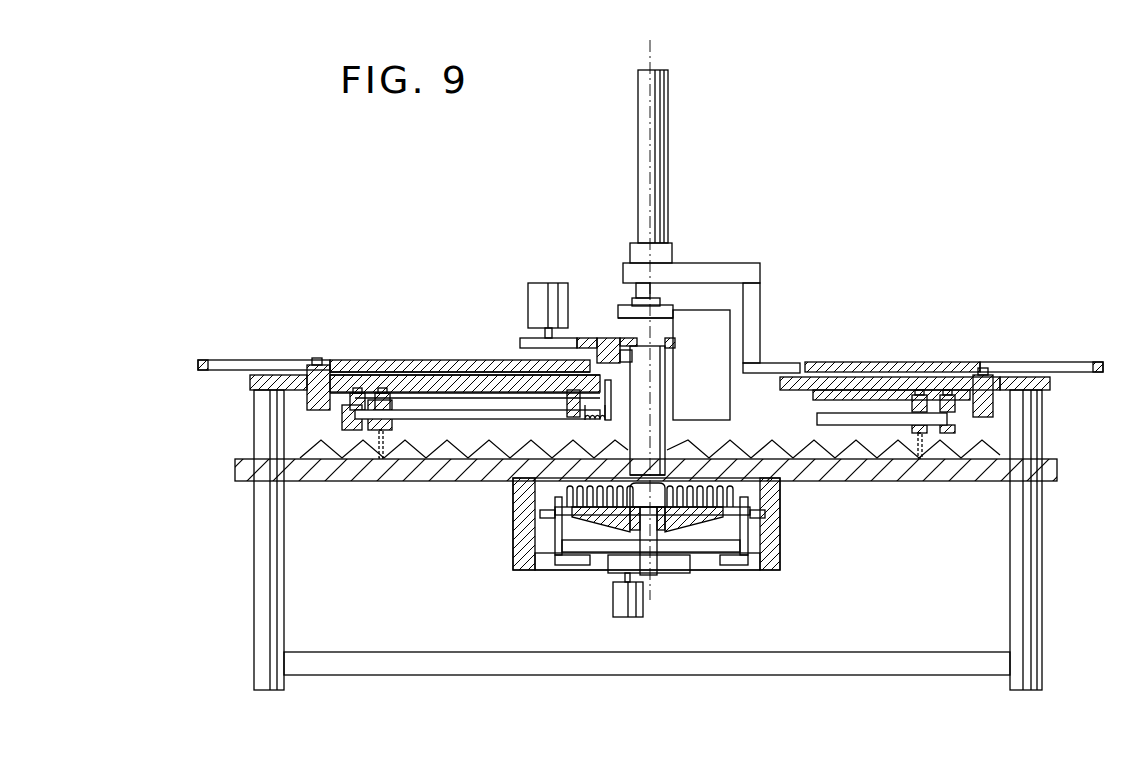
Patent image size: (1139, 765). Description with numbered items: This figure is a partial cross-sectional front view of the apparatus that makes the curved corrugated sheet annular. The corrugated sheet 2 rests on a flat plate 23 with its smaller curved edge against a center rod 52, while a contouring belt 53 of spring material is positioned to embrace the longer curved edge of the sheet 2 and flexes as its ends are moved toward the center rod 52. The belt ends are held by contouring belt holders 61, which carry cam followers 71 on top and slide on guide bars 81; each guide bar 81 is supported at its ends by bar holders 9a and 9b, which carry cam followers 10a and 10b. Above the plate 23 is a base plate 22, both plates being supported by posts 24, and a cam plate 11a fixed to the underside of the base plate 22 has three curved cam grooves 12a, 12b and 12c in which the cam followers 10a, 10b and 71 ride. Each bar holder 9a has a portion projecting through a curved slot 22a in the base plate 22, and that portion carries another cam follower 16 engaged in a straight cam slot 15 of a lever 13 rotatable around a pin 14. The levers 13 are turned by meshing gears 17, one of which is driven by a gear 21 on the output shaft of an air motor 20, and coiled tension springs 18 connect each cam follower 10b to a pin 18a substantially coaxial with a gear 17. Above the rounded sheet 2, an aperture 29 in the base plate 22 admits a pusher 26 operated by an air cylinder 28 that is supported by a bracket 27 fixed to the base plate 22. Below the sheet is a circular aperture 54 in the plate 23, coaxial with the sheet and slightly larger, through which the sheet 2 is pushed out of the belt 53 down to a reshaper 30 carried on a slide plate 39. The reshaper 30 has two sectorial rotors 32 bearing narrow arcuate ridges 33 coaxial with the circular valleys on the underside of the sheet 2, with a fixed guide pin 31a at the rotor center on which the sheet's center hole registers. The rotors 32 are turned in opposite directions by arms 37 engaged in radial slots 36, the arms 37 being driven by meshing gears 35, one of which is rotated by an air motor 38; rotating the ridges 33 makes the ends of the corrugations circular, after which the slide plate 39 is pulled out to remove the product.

The corrugated sheet 2 is at (428, 445).
The bar holder 9a is at (316, 412).
The bar holder 9b is at (560, 435).
The cam follower 10a is at (368, 396).
The cam follower 10b is at (470, 378).
The cam plate 11a is at (405, 396).
The cam groove 12a is at (356, 392).
The cam groove 12b is at (567, 360).
The cam groove 12c is at (387, 393).
The lever 13 is at (208, 360).
The pin 14 is at (598, 348).
The cam slot 15 is at (328, 372).
The cam follower 16 is at (318, 378).
The gear 17 is at (685, 283).
The coiled tension spring 18 is at (609, 382).
The pin 18a is at (605, 412).
The air motor 20 is at (535, 288).
The gear 21 is at (520, 342).
The base plate 22 is at (1020, 377).
The curved slot 22a is at (280, 386).
The flat plate 23 is at (1048, 472).
The post 24 is at (265, 420).
The pusher 26 is at (708, 318).
The bracket 27 is at (697, 280).
The air cylinder 28 is at (668, 103).
The aperture 29 is at (760, 380).
The reshaper 30 is at (717, 505).
The guide pin 31a is at (625, 523).
The rotor 32 is at (687, 525).
The arcuate ridge 33 is at (700, 500).
The gear 35 is at (659, 573).
The radial slot 36 is at (763, 532).
The arm 37 is at (748, 502).
The air motor 38 is at (620, 603).
The slide plate 39 is at (637, 498).
The center rod 52 is at (667, 437).
The contouring belt 53 is at (376, 447).
The circular aperture 54 is at (720, 468).
The contouring belt holder 61 is at (372, 435).
The cam follower 71 is at (375, 390).
The guide bar 81 is at (443, 413).